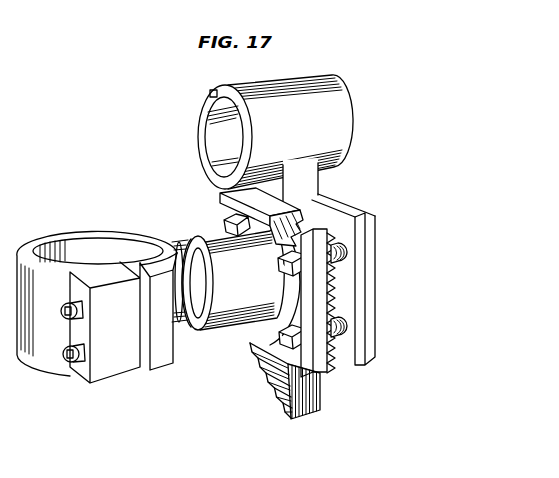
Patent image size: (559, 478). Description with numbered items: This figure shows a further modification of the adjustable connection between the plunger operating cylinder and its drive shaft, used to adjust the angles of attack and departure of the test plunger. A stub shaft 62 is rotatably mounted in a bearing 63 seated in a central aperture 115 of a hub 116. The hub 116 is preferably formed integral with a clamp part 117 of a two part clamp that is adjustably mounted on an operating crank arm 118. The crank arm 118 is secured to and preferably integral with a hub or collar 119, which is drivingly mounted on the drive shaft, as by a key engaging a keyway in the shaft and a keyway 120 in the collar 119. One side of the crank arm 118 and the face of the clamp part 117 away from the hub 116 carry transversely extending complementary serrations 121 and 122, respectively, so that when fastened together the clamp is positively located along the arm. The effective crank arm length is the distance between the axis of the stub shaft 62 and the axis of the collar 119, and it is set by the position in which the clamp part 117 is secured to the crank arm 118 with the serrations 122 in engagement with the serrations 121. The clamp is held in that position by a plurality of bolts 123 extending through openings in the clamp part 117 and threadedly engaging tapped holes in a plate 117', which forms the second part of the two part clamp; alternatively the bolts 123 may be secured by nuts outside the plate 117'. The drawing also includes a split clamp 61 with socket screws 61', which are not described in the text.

The split clamp 61 is at (97, 323).
The clamp socket screws 61' is at (58, 347).
The stub shaft 62 is at (188, 340).
The bearing 63 is at (189, 256).
The central aperture 115 is at (205, 331).
The hub 116 is at (212, 240).
The clamp part 117 is at (338, 325).
The clamp plate 117' is at (376, 278).
The operating crank arm 118 is at (310, 412).
The hub or collar 119 is at (303, 78).
The keyway 120 is at (211, 93).
The serrations 121 is at (270, 411).
The serrations 122 is at (341, 362).
The bolts 123 is at (284, 273).